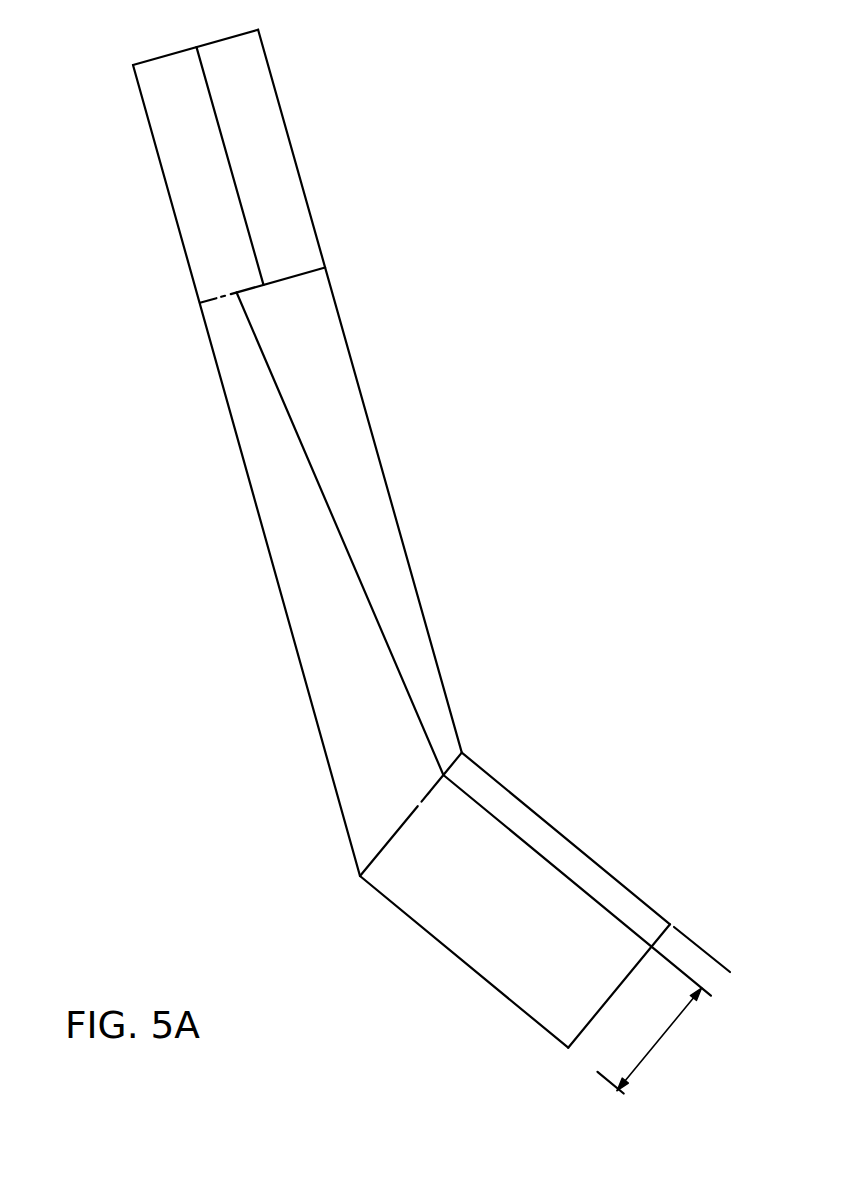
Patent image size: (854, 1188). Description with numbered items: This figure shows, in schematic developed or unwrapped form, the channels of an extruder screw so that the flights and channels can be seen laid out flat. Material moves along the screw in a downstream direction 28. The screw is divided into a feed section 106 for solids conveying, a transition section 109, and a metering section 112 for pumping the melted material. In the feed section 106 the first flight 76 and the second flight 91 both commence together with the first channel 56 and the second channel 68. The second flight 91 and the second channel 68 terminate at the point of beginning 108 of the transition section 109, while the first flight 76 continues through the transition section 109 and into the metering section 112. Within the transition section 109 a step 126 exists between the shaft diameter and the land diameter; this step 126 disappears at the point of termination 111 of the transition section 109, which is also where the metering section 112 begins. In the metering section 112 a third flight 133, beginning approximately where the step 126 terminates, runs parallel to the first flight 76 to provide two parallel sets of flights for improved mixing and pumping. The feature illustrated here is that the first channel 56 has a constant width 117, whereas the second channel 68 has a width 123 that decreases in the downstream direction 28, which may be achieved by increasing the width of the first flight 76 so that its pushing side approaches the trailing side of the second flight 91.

The downstream direction 28 is at (463, 22).
The first channel 56 is at (280, 483).
The second channel 68 is at (615, 895).
The first flight 76 is at (302, 168).
The second flight 91 is at (553, 862).
The feed section 106 is at (600, 899).
The point of beginning 108 is at (458, 755).
The transition section 109 is at (350, 534).
The point of termination 111 is at (310, 271).
The metering section 112 is at (296, 175).
The width of first channel 117 is at (660, 1043).
The width of second channel 123 is at (722, 962).
The step 126 is at (337, 522).
The third flight 133 is at (227, 147).